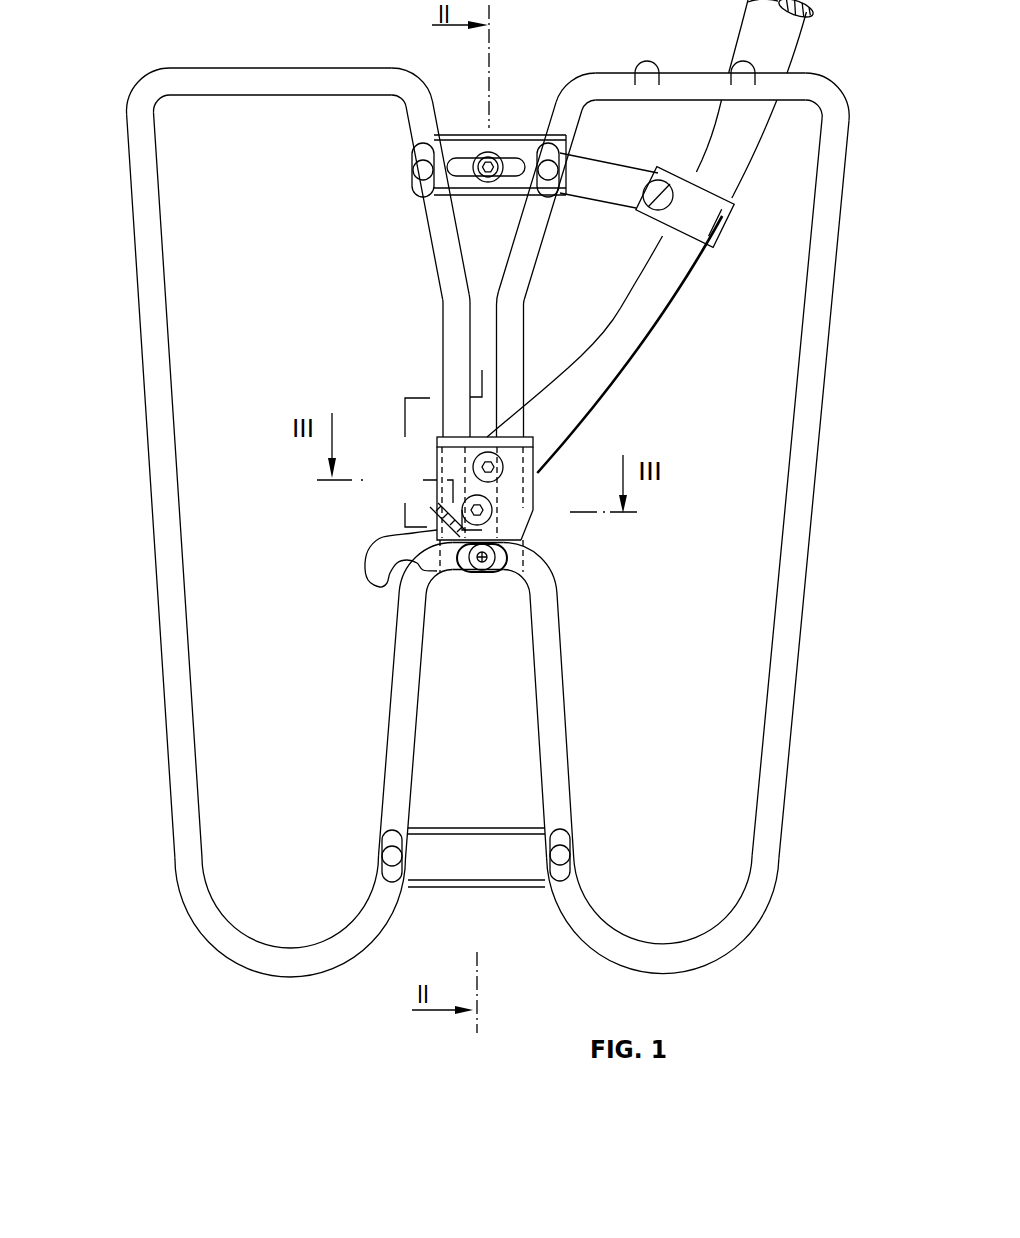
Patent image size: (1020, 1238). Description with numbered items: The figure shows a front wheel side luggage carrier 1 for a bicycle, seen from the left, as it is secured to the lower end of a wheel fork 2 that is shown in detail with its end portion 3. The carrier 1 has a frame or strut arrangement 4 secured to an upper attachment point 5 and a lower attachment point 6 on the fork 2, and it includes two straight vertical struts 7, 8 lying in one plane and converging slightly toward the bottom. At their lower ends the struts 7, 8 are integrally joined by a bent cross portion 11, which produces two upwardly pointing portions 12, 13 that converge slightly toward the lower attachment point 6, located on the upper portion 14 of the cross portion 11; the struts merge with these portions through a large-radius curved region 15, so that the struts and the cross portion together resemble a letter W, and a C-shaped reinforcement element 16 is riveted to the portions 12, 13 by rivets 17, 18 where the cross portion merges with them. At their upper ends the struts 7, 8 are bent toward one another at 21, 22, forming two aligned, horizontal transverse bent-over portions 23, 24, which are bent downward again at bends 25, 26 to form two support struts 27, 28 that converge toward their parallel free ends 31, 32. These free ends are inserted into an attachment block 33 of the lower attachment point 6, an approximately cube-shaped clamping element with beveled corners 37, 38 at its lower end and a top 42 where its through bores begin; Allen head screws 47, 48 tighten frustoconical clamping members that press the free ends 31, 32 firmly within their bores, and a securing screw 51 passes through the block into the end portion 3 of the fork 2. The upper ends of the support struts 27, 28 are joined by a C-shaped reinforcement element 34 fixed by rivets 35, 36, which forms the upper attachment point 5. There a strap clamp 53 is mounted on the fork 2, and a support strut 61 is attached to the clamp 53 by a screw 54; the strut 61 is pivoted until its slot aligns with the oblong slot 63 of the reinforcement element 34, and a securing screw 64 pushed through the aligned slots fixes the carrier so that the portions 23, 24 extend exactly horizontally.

The front wheel side luggage carrier 1 is at (826, 441).
The wheel fork 2 is at (613, 381).
The end portion 3 is at (372, 566).
The frame or strut arrangement 4 is at (766, 519).
The upper attachment point 5 is at (500, 119).
The lower attachment point 6 is at (468, 598).
The vertical strut 7 is at (187, 598).
The vertical strut 8 is at (772, 637).
The cross portion 11 is at (340, 932).
The upwardly pointing portion 12 is at (388, 722).
The upwardly pointing portion 13 is at (565, 703).
The upper portion 14 is at (513, 574).
The leg bend portion 15 is at (562, 654).
The reinforcement element 16 is at (460, 888).
The rivet 17 is at (384, 855).
The rivet 18 is at (569, 857).
The bend 21 is at (133, 92).
The bend 22 is at (837, 87).
The transverse bent-over portion 23 is at (279, 97).
The transverse bent-over portion 24 is at (673, 101).
The bend 25 is at (393, 76).
The right upper corner 26 is at (568, 80).
The support strut 27 is at (428, 231).
The support strut 28 is at (544, 238).
The free end 31 is at (441, 333).
The free end 32 is at (525, 327).
The attachment block 33 is at (533, 487).
The reinforcement element 34 is at (450, 134).
The rivet 35 is at (413, 172).
The rivet 36 is at (560, 156).
The beveled corner 37 is at (379, 537).
The beveled corner 38 is at (531, 527).
The top 42 is at (489, 435).
The Allen head screw 47 is at (463, 504).
The Allen head screw 48 is at (503, 465).
The securing screw 51 is at (457, 557).
The strap clamp 53 is at (720, 234).
The screw 54 is at (661, 181).
The support strut 61 is at (606, 180).
The oblong slot 63 is at (515, 161).
The securing screw 64 is at (483, 183).